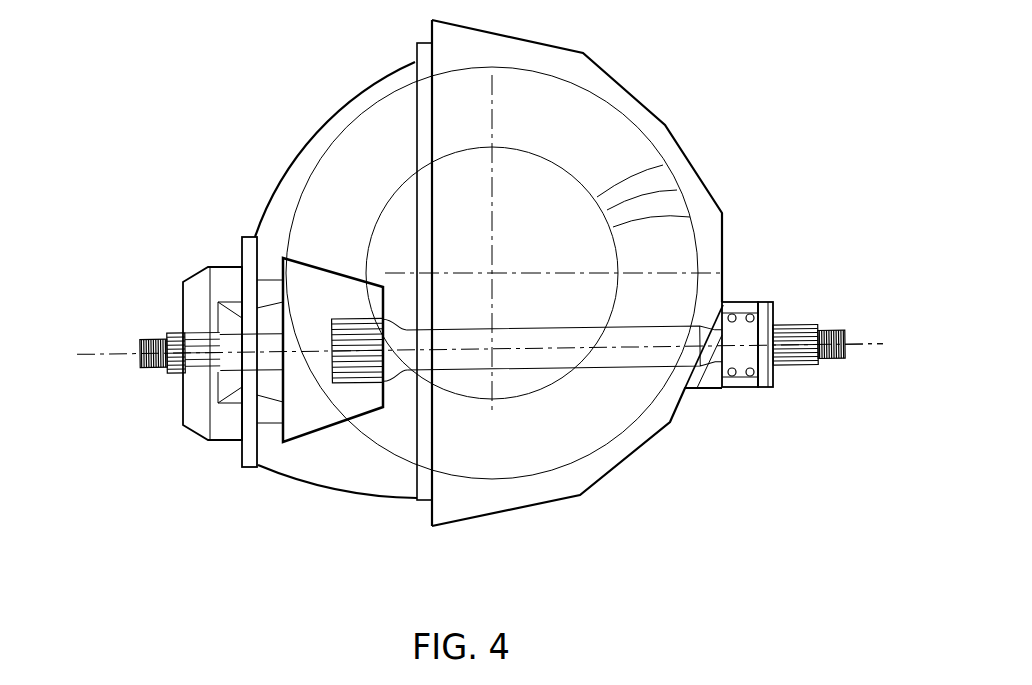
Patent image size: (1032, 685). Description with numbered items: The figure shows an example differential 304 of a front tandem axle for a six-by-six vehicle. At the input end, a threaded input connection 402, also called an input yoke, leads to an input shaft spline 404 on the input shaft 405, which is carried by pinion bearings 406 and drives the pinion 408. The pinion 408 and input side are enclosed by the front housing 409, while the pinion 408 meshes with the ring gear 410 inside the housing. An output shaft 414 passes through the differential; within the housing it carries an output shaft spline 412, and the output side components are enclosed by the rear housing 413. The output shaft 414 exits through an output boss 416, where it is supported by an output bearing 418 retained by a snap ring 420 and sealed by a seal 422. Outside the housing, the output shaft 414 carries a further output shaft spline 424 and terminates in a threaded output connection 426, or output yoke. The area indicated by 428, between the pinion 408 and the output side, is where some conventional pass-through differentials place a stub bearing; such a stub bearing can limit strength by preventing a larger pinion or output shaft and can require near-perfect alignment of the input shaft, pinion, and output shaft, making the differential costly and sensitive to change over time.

The differential 304 is at (494, 299).
The threaded input connection 402 is at (150, 335).
The input shaft spline 404 is at (177, 332).
The input shaft 405 is at (243, 367).
The pinion bearings 406 is at (277, 395).
The pinion 408 is at (330, 430).
The front housing 409 is at (305, 157).
The ring gear 410 is at (628, 112).
The output shaft spline 412 is at (360, 320).
The rear housing 413 is at (700, 170).
The output shaft 414 is at (610, 373).
The output boss 416 is at (720, 398).
The output bearing 418 is at (748, 317).
The snap ring 420 is at (767, 397).
The seal 422 is at (778, 312).
The output shaft spline 424 is at (807, 333).
The threaded output connection 426 is at (838, 368).
The area 428 is at (417, 415).